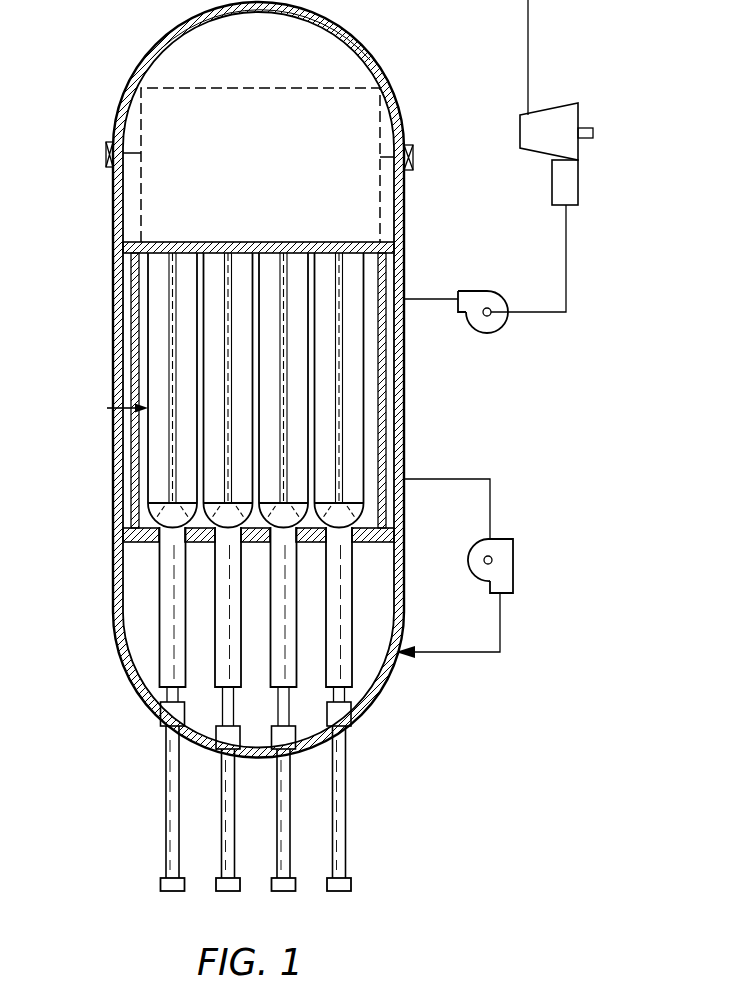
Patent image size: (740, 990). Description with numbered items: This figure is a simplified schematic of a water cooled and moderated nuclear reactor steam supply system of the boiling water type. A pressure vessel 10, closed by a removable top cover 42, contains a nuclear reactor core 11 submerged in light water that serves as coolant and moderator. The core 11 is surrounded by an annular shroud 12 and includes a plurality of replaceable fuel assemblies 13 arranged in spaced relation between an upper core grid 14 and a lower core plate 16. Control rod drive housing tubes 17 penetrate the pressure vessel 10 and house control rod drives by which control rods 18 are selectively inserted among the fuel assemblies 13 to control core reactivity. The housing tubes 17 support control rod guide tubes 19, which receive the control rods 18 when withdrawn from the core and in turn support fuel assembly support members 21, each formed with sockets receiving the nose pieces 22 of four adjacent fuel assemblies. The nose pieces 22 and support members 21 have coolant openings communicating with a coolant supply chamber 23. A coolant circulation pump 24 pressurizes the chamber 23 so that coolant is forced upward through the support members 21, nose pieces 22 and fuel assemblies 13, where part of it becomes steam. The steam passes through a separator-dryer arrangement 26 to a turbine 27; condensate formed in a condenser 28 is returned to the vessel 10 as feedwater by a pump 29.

The pressure vessel 10 is at (113, 318).
The top cover 42 is at (145, 60).
The separator-dryer arrangement 26 is at (141, 178).
The upper core grid 14 is at (135, 243).
The fuel assemblies 13 is at (147, 359).
The nuclear reactor core 11 is at (107, 408).
The annular shroud 12 is at (130, 440).
The control rods 18 is at (172, 468).
The nose pieces 22 is at (152, 513).
The fuel assembly support members 21 is at (153, 540).
The control rod guide tubes 19 is at (158, 620).
The control rod drive housing tubes 17 is at (162, 800).
The lower core plate 16 is at (367, 545).
The coolant supply chamber 23 is at (383, 621).
The coolant circulation pump 24 is at (513, 560).
The pump 29 is at (478, 290).
The turbine 27 is at (520, 130).
The condenser 28 is at (552, 182).